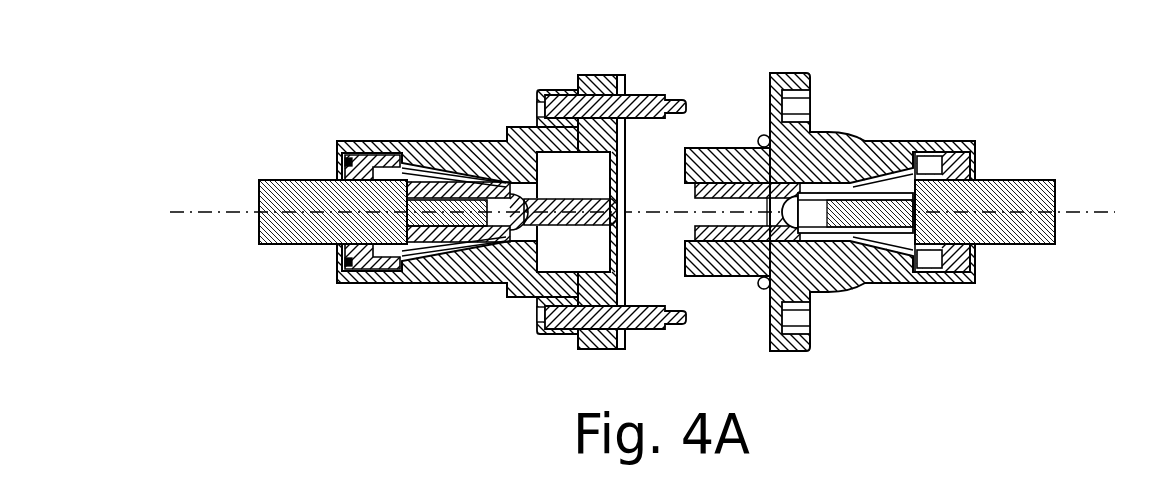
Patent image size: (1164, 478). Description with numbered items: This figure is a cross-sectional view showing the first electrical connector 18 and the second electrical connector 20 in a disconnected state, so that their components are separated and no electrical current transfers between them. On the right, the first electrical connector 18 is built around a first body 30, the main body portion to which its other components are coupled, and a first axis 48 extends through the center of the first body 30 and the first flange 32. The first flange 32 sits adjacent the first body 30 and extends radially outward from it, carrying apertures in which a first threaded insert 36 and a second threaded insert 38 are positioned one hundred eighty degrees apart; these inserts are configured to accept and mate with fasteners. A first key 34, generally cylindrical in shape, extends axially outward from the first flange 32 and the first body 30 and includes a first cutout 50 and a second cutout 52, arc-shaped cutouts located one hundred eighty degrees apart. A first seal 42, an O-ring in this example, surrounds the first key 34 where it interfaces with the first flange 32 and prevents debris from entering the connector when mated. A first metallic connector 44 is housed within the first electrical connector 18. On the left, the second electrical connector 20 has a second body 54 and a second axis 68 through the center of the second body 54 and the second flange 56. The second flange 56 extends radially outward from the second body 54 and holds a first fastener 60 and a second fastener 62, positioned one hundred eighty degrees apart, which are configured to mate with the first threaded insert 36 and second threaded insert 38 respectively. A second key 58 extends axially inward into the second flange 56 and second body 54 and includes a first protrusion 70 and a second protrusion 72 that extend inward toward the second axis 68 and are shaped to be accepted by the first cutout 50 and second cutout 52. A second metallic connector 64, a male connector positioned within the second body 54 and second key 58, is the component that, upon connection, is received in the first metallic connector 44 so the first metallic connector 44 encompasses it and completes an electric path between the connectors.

The first electrical connector 18 is at (1062, 112).
The second electrical connector 20 is at (252, 128).
The first body 30 is at (888, 150).
The first flange 32 is at (800, 346).
The first key 34 is at (718, 166).
The first threaded insert 36 is at (800, 106).
The second threaded insert 38 is at (800, 315).
The first seal 42 is at (765, 134).
The first metallic connector 44 is at (807, 247).
The first axis 48 is at (1110, 212).
The first cutout 50 is at (716, 148).
The second cutout 52 is at (717, 278).
The second body 54 is at (432, 140).
The second flange 56 is at (608, 346).
The second key 58 is at (537, 274).
The first fastener 60 is at (613, 75).
The second fastener 62 is at (547, 334).
The second metallic connector 64 is at (510, 222).
The second axis 68 is at (180, 212).
The first protrusion 70 is at (574, 150).
The second protrusion 72 is at (568, 292).